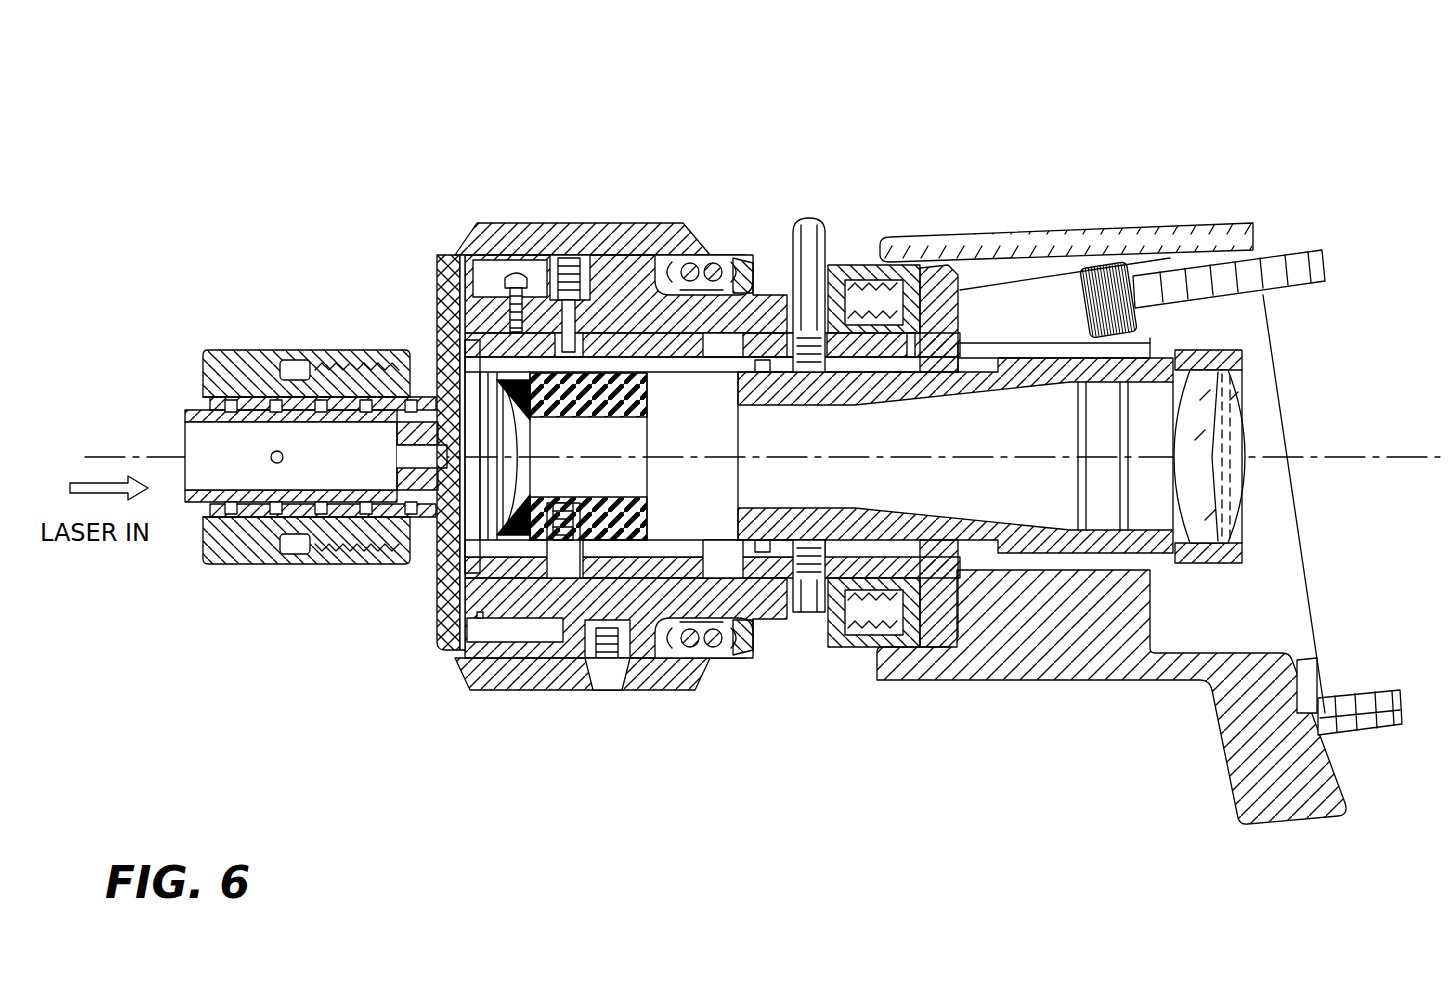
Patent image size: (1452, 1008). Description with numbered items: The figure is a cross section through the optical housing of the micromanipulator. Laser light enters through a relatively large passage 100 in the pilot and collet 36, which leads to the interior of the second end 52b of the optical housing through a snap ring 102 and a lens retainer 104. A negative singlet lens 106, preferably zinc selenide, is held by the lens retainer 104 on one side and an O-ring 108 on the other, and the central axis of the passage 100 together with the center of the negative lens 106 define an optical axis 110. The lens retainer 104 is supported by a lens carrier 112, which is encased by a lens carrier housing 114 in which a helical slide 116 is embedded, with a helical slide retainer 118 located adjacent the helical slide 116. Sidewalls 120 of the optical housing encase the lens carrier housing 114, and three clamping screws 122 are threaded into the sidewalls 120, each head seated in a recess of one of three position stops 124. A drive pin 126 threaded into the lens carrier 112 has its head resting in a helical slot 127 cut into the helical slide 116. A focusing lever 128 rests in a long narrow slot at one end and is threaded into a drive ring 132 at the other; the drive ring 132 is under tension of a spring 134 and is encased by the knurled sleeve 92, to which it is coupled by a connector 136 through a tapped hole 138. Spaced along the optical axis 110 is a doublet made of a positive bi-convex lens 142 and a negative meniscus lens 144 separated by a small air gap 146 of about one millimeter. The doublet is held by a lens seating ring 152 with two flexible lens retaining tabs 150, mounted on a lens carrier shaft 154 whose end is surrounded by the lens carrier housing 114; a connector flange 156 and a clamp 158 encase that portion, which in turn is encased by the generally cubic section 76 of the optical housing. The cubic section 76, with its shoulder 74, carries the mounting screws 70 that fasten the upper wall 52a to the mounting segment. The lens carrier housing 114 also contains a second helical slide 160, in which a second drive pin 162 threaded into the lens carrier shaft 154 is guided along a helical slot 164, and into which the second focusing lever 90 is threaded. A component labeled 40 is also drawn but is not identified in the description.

The collet 36 is at (222, 348).
The lens housing 40 is at (1262, 427).
The upper wall 52a is at (1342, 290).
The second end 52b is at (160, 351).
The mounting screws 70 is at (1298, 265).
The shoulder 74 is at (1287, 818).
The generally cubic section 76 is at (1130, 237).
The second focusing lever 90 is at (866, 262).
The knurled sleeve 92 is at (487, 222).
The passage 100 is at (215, 440).
The snap ring 102 is at (465, 362).
The lens retainer 104 is at (462, 385).
The negative singlet lens 106 is at (330, 562).
The O-ring 108 is at (540, 415).
The optical axis 110 is at (306, 338).
The lens carrier 112 is at (487, 337).
The lens carrier housing 114 is at (775, 290).
The helical slide 116 is at (690, 262).
The helical slide retainer 118 is at (452, 345).
The sidewalls 120 is at (826, 225).
The clamping screws 122 is at (530, 270).
The position stops 124 is at (487, 275).
The drive pin 126 is at (515, 585).
The helical slot 127 is at (548, 585).
The focusing lever 128 is at (566, 255).
The drive ring 132 is at (473, 262).
The spring 134 is at (763, 330).
The connector 136 is at (605, 708).
The tapped hole 138 is at (700, 663).
The positive bi-convex lens 142 is at (1230, 480).
The negative meniscus lens 144 is at (1228, 470).
The air gap 146 is at (1232, 543).
The flexible lens retaining tabs 150 is at (1243, 390).
The lens seating ring 152 is at (1233, 352).
The lens carrier shaft 154 is at (1062, 545).
The connector flange 156 is at (903, 340).
The clamp 158 is at (887, 337).
The second helical slide 160 is at (920, 340).
The second drive pin 162 is at (800, 565).
The helical slot 164 is at (815, 575).